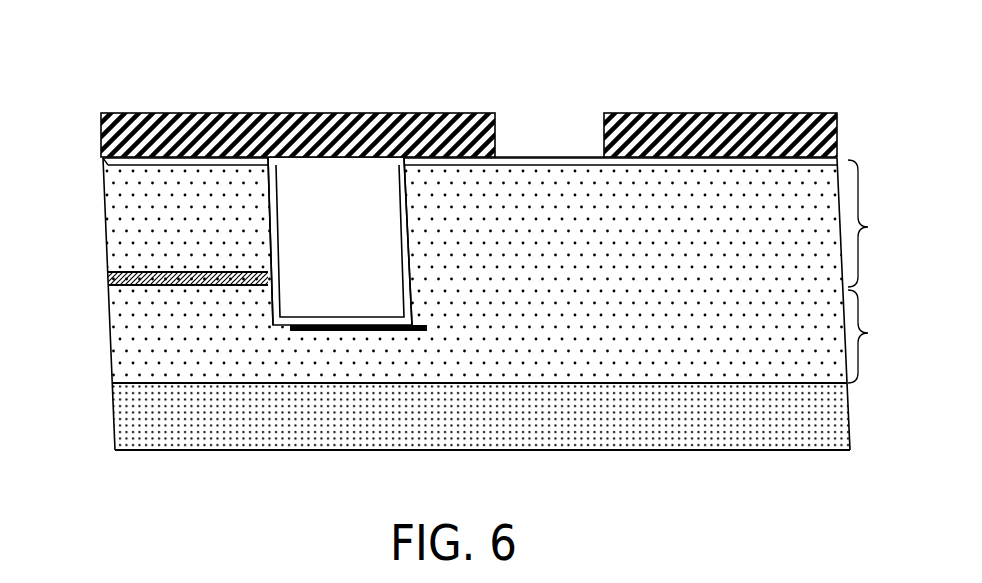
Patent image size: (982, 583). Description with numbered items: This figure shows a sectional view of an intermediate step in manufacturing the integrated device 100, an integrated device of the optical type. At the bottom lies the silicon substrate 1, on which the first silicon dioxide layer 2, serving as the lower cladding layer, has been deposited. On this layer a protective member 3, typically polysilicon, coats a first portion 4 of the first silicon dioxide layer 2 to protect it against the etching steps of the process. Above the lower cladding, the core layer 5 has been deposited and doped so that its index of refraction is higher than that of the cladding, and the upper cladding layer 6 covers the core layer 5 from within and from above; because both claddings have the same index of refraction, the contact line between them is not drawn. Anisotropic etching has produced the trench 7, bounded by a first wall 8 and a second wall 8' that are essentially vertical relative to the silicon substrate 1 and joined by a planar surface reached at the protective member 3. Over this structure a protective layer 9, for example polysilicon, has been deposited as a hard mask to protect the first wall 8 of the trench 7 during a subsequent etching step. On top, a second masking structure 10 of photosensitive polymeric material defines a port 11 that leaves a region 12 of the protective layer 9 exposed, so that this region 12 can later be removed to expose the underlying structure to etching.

The silicon substrate 1 is at (128, 409).
The first silicon dioxide layer 2 is at (127, 332).
The protective member 3 is at (290, 328).
The first portion 4 is at (362, 371).
The core layer 5 is at (108, 279).
The upper cladding layer 6 is at (122, 221).
The trench 7 is at (352, 272).
The first wall 8 is at (259, 189).
The second wall 8' is at (421, 188).
The protective layer 9 is at (103, 159).
The second masking structure 10 is at (148, 130).
The port 11 is at (559, 150).
The region 12 is at (576, 150).
The integrated device 100 is at (227, 85).